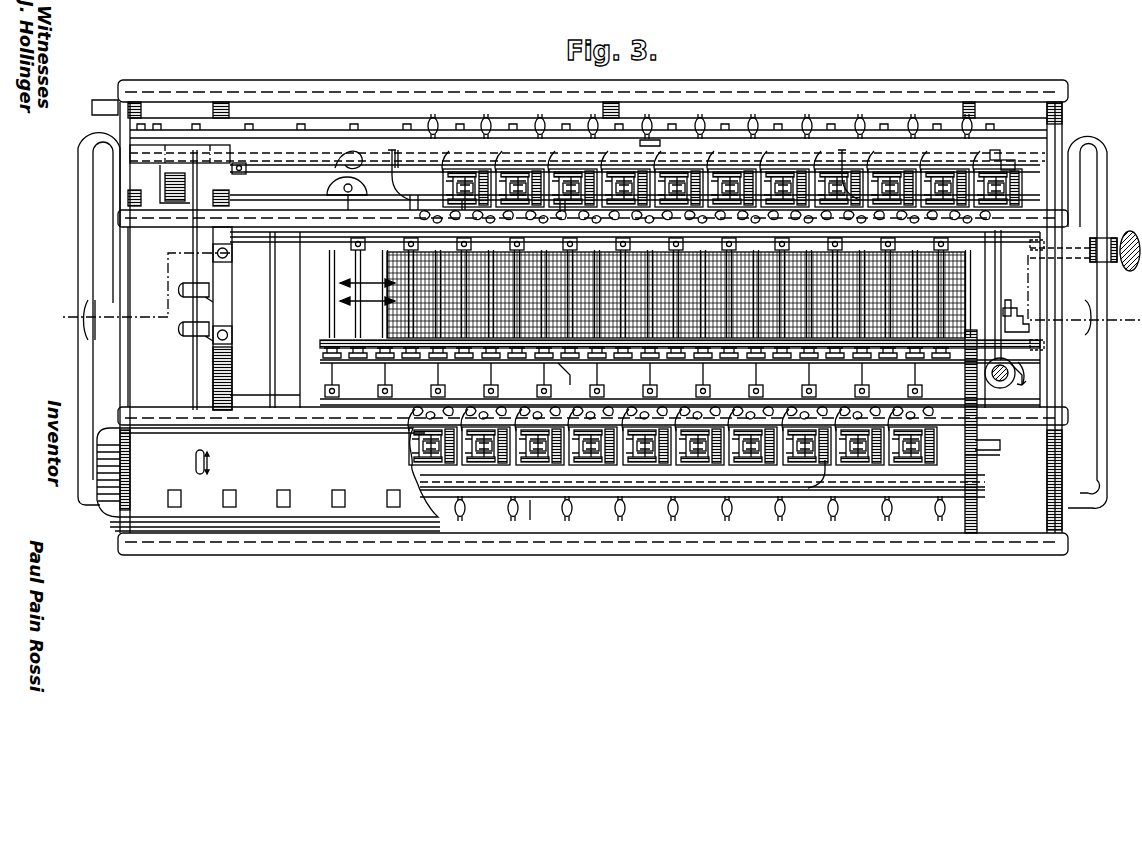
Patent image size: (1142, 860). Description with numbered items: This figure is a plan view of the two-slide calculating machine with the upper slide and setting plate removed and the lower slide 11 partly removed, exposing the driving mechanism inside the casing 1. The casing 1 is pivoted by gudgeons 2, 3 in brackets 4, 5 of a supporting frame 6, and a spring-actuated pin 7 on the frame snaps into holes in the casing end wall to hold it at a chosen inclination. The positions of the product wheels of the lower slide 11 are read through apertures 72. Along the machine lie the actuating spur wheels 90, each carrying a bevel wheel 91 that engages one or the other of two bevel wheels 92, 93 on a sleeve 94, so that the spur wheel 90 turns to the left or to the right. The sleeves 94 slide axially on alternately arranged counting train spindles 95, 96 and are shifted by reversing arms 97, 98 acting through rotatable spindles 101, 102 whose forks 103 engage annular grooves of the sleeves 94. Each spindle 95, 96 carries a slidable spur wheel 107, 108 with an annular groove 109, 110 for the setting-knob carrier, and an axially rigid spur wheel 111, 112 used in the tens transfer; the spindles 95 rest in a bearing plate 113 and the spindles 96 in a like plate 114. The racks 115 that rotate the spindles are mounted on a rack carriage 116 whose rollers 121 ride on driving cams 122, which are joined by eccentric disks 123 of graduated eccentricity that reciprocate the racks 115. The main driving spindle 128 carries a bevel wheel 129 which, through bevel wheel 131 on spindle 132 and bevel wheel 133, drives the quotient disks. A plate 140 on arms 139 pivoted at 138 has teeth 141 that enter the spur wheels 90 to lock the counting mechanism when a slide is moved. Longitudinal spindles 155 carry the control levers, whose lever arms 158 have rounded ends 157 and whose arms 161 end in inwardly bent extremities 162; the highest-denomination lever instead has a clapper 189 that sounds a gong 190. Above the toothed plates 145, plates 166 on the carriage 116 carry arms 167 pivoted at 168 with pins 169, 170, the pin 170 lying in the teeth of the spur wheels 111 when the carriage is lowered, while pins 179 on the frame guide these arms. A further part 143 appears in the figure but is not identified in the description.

The casing 1 is at (293, 102).
The gudgeon 2 is at (1095, 318).
The gudgeon 3 is at (88, 335).
The bracket 4 is at (155, 572).
The bracket 5 is at (113, 228).
The supporting frame 6 is at (86, 413).
The spring-actuated pin 7 is at (62, 330).
The lower slide 11 is at (268, 479).
The apertures 72 is at (388, 492).
The actuating spur wheel 90 is at (905, 168).
The bevel wheel 91 is at (478, 168).
The bevel wheel 92 is at (460, 168).
The bevel wheel 93 is at (1012, 196).
The sleeve 94 is at (672, 175).
The counting train spindle 95 is at (470, 272).
The counting train spindle 96 is at (336, 290).
The reversing arm 97 is at (210, 285).
The reversing arm 98 is at (210, 324).
The rotatable spindle 101 is at (263, 194).
The rotatable spindle 102 is at (975, 455).
The fork 103 is at (428, 195).
The spur wheel 107 is at (330, 340).
The spur wheel 108 is at (356, 344).
The annular groove 109 is at (330, 350).
The annular groove 110 is at (345, 356).
The spur wheel 111 is at (645, 239).
The spur wheel 112 is at (345, 393).
The bearing plate 113 is at (480, 360).
The bearing plate 114 is at (310, 250).
The rack 115 is at (420, 300).
The rack carriage 116 is at (352, 250).
The roller 121 is at (1040, 250).
The driving cam 122 is at (1028, 240).
The eccentric disk 123 is at (1012, 312).
The main driving spindle 128 is at (1000, 388).
The bevel wheel 129 is at (1037, 373).
The bevel wheel 131 is at (1020, 340).
The spindle 132 is at (1002, 282).
The bevel wheel 133 is at (995, 164).
The pivot 138 is at (985, 440).
The arm 139 is at (163, 180).
The plate 140 is at (200, 160).
The teeth 141 is at (395, 150).
The pin 143 is at (545, 212).
The toothed plate 145 is at (210, 243).
The longitudinal spindle 155 is at (508, 168).
The rounded upper end 157 is at (647, 126).
The lever arm 158 is at (650, 143).
The arm 161 is at (795, 482).
The inwardly bent extremity 162 is at (678, 314).
The plate 166 is at (282, 250).
The arm 167 is at (345, 219).
The pivot 168 is at (778, 395).
The pin 169 is at (604, 395).
The pin 170 is at (590, 395).
The pin 179 is at (665, 314).
The clapper 189 is at (344, 156).
The gong 190 is at (330, 187).